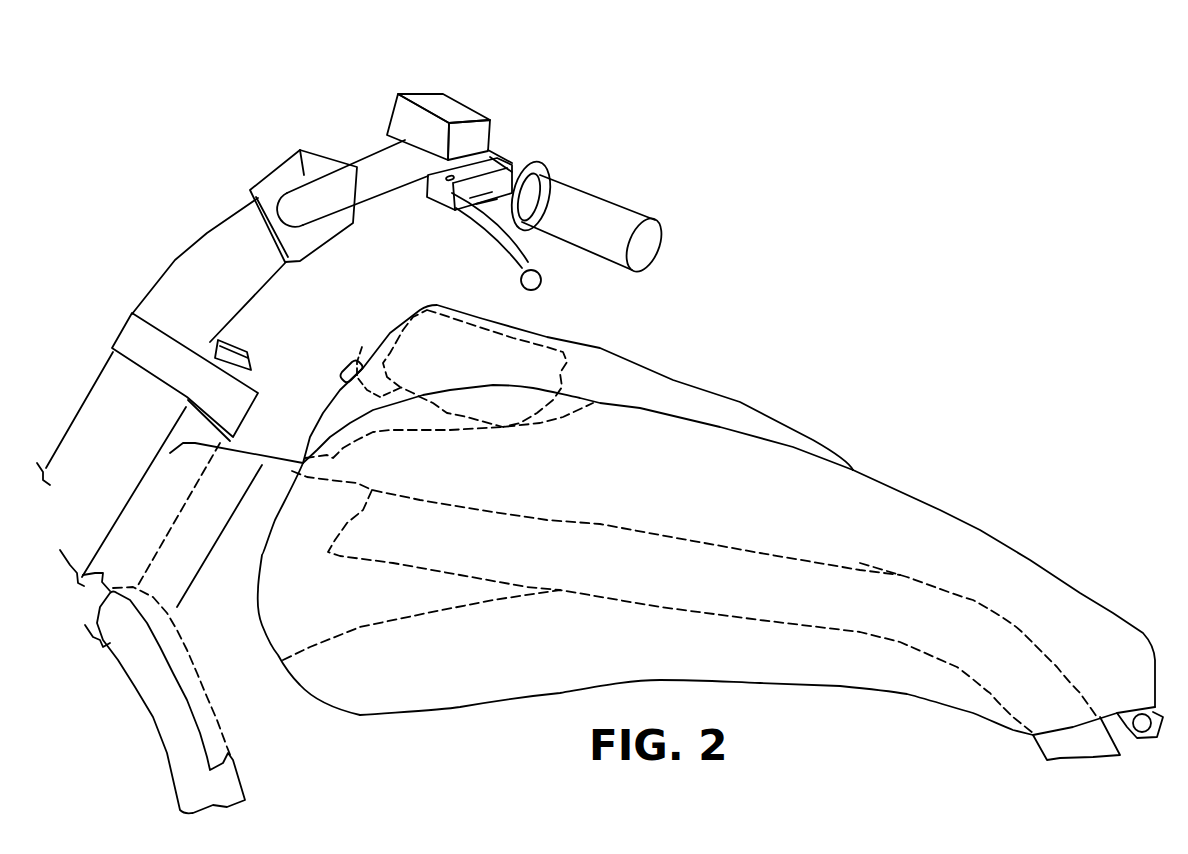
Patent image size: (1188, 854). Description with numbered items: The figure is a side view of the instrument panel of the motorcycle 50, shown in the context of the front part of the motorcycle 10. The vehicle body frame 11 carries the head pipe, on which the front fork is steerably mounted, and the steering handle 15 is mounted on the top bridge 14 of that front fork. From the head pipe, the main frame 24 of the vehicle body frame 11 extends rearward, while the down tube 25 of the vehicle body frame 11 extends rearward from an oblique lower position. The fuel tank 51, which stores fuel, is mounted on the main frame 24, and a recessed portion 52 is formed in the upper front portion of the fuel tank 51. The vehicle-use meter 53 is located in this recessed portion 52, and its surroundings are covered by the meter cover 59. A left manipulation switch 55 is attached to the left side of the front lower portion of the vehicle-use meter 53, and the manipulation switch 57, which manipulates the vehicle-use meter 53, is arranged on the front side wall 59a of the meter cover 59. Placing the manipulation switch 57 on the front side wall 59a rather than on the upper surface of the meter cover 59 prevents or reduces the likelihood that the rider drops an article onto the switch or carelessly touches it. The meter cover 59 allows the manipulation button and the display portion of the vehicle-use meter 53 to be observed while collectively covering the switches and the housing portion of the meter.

The motorcycle 10 is at (128, 117).
The vehicle body frame 11 is at (285, 433).
The top bridge 14 is at (122, 327).
The steering handle 15 is at (497, 152).
The main frame 24 is at (560, 512).
The down tube 25 is at (152, 693).
The instrument panel of the motorcycle 50 is at (718, 290).
The fuel tank 51 is at (887, 478).
The recessed portion 52 is at (508, 428).
The vehicle-use meter 53 is at (508, 342).
The left manipulation switch 55 is at (377, 380).
The manipulation switch (left manipulation button) 57 is at (344, 358).
The meter cover 59 is at (745, 403).
The front side wall 59a is at (303, 462).